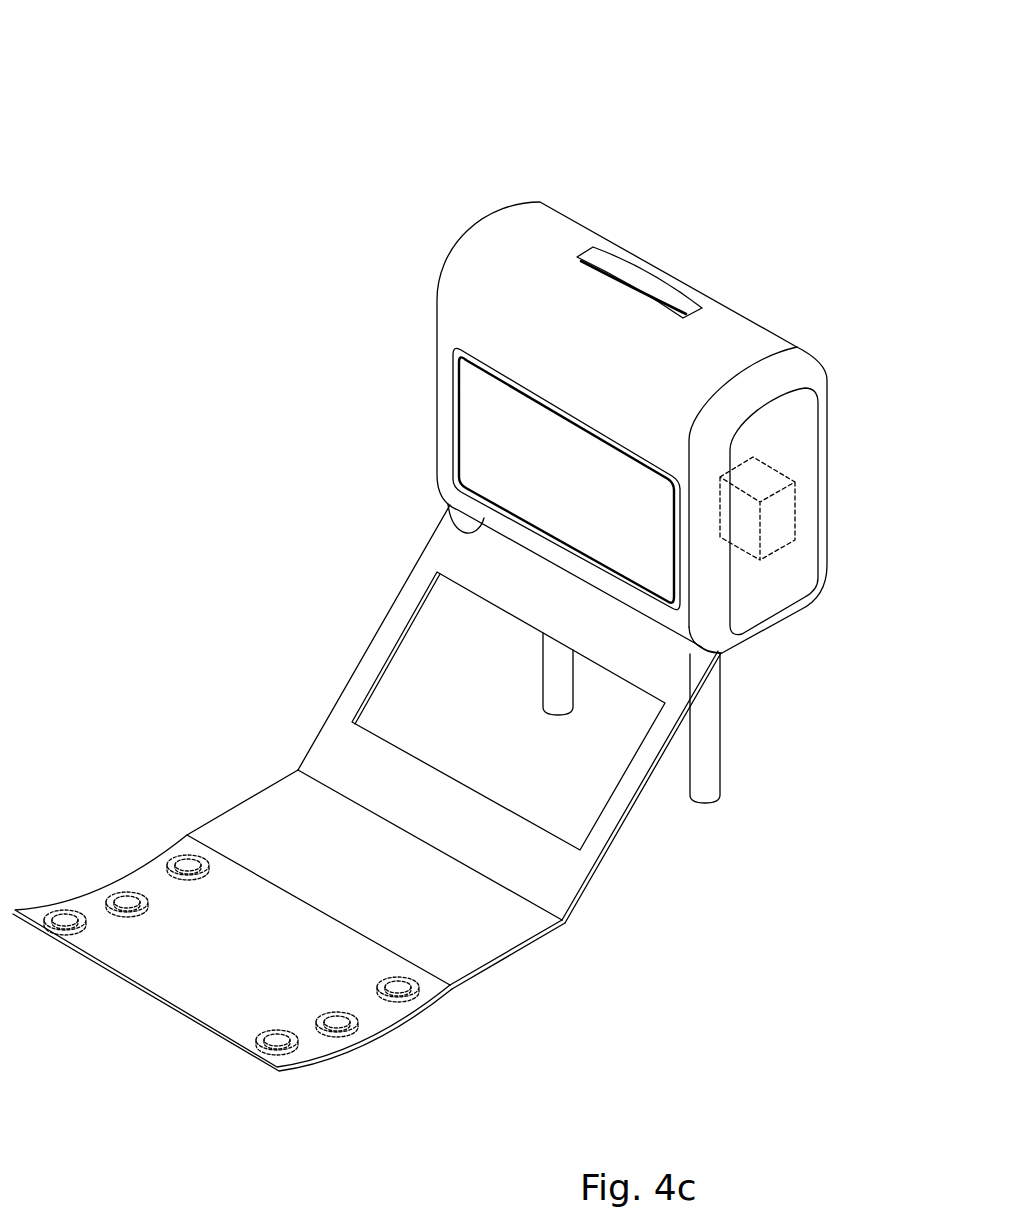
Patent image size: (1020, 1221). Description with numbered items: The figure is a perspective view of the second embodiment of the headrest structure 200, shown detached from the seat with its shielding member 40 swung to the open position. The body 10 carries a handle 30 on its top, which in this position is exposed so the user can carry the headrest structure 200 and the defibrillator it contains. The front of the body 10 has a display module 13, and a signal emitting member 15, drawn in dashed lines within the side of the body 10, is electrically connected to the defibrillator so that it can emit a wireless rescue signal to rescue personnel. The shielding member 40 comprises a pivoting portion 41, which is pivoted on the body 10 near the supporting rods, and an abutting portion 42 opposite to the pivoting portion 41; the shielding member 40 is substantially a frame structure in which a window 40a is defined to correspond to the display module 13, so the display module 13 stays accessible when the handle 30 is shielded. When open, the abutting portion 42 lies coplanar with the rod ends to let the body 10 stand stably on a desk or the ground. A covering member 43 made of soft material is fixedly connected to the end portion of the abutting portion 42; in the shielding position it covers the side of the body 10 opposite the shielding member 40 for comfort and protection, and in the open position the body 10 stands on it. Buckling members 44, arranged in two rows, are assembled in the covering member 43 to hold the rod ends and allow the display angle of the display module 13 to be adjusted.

The headrest structure 200 is at (103, 52).
The body 10 is at (579, 206).
The handle 30 is at (637, 272).
The display module 13 is at (458, 373).
The signal emitting member 15 is at (773, 540).
The pivoting portion 41 is at (452, 532).
The shielding member 40 is at (367, 826).
The window 40a is at (415, 678).
The abutting portion 42 is at (538, 923).
The covering member 43 is at (232, 959).
The buckling member 44 is at (350, 1028).